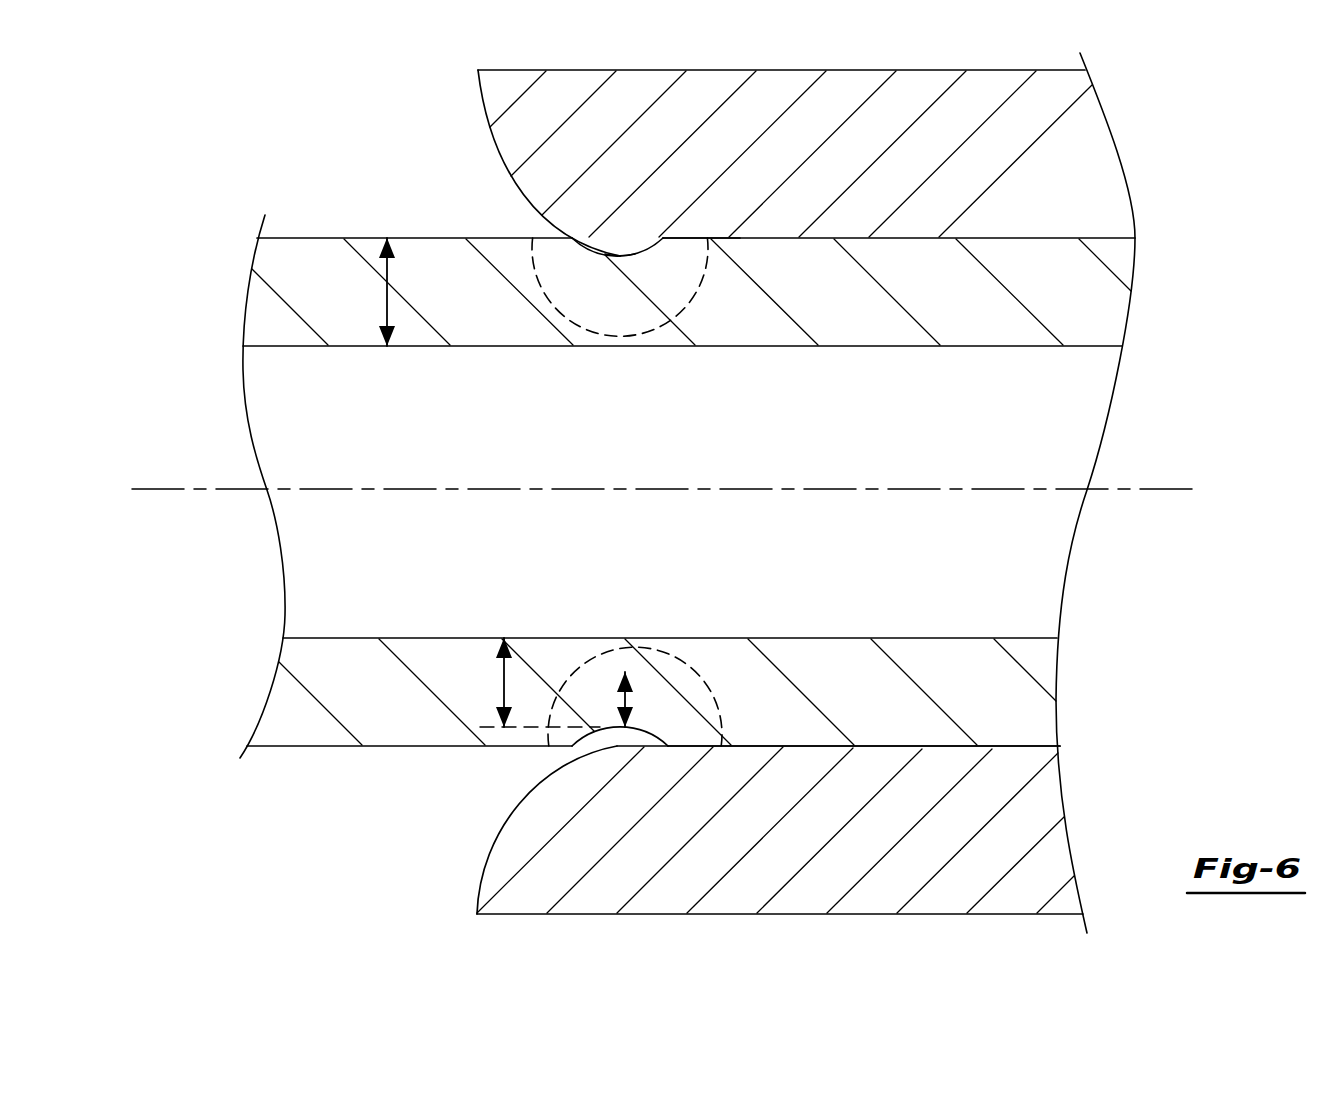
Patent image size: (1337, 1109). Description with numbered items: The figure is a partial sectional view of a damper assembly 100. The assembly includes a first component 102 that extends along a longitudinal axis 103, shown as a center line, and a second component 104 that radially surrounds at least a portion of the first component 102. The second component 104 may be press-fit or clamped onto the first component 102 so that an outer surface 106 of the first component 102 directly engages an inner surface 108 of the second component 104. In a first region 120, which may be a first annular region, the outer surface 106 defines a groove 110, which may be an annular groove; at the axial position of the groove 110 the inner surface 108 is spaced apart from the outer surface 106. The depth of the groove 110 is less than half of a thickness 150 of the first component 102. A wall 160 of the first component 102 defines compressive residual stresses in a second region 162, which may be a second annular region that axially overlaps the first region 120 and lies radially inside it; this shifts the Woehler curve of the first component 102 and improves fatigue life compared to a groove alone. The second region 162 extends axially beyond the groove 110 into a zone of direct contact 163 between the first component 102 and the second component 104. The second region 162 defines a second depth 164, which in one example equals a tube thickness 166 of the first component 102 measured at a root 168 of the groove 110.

The damper assembly 100 is at (247, 140).
The first component 102 is at (1093, 298).
The longitudinal axis 103 is at (1143, 492).
The second component 104 is at (1095, 158).
The outer surface 106 is at (850, 238).
The inner surface 108 is at (912, 238).
The groove 110 is at (640, 243).
The first region 120 is at (583, 250).
The thickness 150 is at (387, 298).
The wall 160 is at (1008, 710).
The second region 162 is at (622, 315).
The zone of direct contact 163 is at (700, 237).
The second depth 164 is at (627, 698).
The tube thickness 166 is at (503, 683).
The root 168 is at (620, 253).